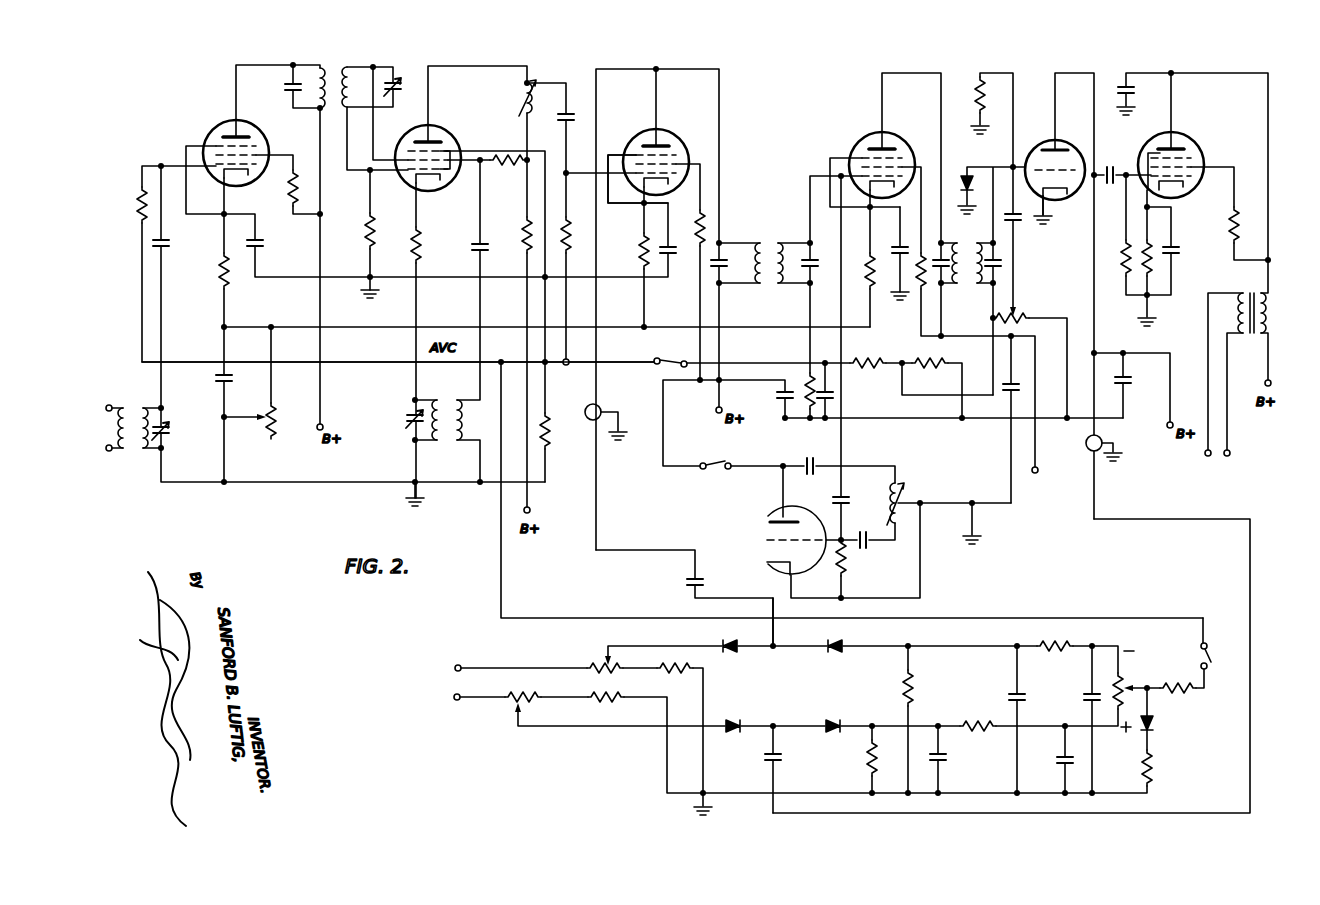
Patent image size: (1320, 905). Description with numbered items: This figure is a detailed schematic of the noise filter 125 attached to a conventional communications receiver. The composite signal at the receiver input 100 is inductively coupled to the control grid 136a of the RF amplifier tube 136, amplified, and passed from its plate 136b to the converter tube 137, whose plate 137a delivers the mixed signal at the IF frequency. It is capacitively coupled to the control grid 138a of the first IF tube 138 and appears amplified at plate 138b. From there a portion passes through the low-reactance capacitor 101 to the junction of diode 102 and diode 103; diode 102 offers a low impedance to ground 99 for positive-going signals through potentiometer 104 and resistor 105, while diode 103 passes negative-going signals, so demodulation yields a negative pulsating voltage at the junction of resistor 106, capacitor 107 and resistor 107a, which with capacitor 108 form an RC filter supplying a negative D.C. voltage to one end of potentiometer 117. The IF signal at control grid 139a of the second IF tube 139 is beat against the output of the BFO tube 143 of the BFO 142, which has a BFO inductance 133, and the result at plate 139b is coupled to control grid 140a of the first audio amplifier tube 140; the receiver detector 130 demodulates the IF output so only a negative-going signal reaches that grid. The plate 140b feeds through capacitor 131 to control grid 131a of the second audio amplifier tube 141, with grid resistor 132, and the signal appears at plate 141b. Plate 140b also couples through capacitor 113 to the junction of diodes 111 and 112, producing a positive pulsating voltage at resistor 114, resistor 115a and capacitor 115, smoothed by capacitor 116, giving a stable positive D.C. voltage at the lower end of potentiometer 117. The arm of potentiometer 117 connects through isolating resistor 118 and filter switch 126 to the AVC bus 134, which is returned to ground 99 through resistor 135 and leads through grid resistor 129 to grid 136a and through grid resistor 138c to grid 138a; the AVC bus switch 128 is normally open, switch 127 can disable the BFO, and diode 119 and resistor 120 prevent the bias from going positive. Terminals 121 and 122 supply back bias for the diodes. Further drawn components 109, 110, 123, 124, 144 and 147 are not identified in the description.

The ground 99 is at (410, 500).
The receiver input 100 is at (118, 406).
The capacitor 101 is at (687, 582).
The diode 102 is at (724, 642).
The diode 103 is at (840, 646).
The potentiometer 104 is at (590, 665).
The resistor 105 is at (662, 665).
The resistor 106 is at (912, 690).
The capacitor 107 is at (1020, 692).
The resistor 107a is at (1050, 644).
The capacitor 108 is at (1086, 698).
The potentiometer 109 is at (508, 702).
The resistor 110 is at (592, 700).
The diode 111 is at (760, 700).
The diode 112 is at (850, 700).
The capacitor 113 is at (782, 757).
The resistor 114 is at (868, 765).
The capacitor 115 is at (946, 757).
The resistor 115a is at (978, 726).
The capacitor 116 is at (1058, 760).
The potentiometer 117 is at (1122, 675).
The isolating resistor 118 is at (1206, 690).
The diode 119 is at (1154, 723).
The resistor 120 is at (1152, 762).
The terminal 121 is at (455, 668).
The terminal 122 is at (453, 697).
The amplifier stage 123 is at (603, 68).
The control circuit 124 is at (1250, 584).
The noise filter 125 is at (1152, 616).
The filter switch 126 is at (1212, 658).
The switch 127 is at (708, 470).
The AVC bus switch 128 is at (672, 368).
The grid resistor 129 is at (142, 187).
The detector 130 is at (965, 178).
The capacitor 131 is at (1110, 180).
The control grid 131a is at (1148, 165).
The grid resistor 132 is at (1125, 262).
The BFO inductance 133 is at (905, 495).
The AVC line 134 is at (401, 364).
The resistor 135 is at (548, 443).
The RF amplifier tube 136 is at (213, 130).
The control grid 136a is at (186, 146).
The plate 136b is at (244, 136).
The converter tube 137 is at (455, 130).
The plate 137a is at (432, 140).
The first IF tube 138 is at (687, 126).
The control grid 138a is at (608, 203).
The plate 138b is at (660, 145).
The grid resistor 138c is at (566, 253).
The second IF tube 139 is at (850, 138).
The control grid 139a is at (841, 176).
The plate 139b is at (886, 149).
The first audio amplifier tube 140 is at (1034, 145).
The control grid 140a is at (1043, 210).
The plate 140b is at (1062, 150).
The second audio amplifier tube 141 is at (1200, 142).
The plate 141b is at (1180, 147).
The BFO 142 is at (765, 512).
The BFO tube 143 is at (785, 517).
The potentiometer 144 is at (1030, 315).
The IF transformer 147 is at (760, 243).